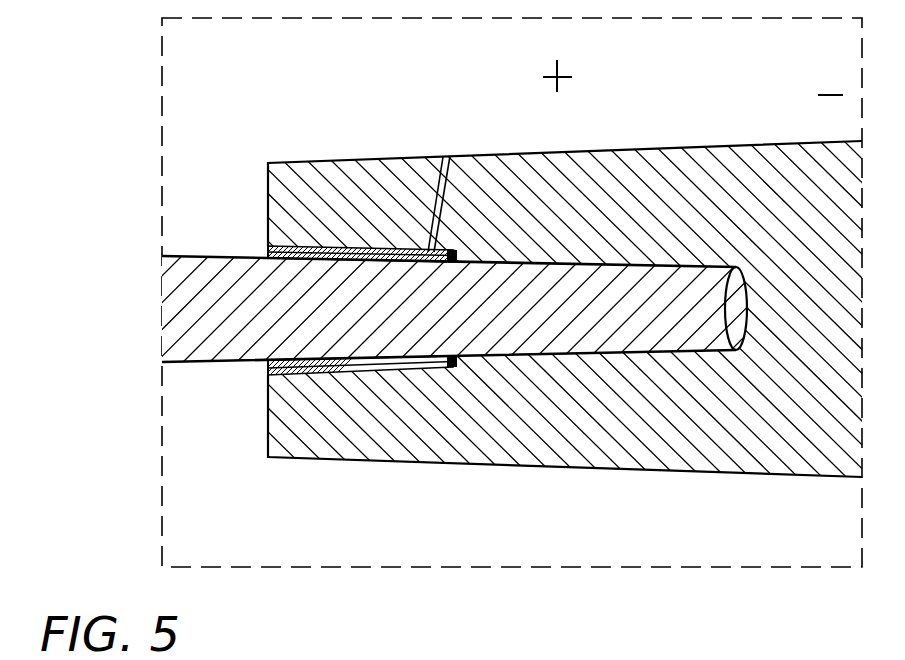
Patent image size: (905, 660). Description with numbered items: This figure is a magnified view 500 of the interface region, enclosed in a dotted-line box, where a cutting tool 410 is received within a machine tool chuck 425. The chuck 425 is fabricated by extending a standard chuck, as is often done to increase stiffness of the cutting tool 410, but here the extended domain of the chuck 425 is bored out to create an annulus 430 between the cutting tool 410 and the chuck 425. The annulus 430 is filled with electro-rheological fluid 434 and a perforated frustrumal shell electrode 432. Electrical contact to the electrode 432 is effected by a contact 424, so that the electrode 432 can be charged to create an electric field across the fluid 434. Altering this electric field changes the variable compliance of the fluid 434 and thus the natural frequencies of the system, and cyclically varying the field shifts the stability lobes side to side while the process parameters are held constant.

The magnified view 500 is at (856, 48).
The cutting tool 410 is at (246, 320).
The machine tool chuck 425 is at (819, 424).
The annulus 430 is at (330, 247).
The perforated frustrumal shell electrode 432 is at (269, 246).
The electro-rheological fluid 434 is at (384, 250).
The contact 424 is at (440, 252).